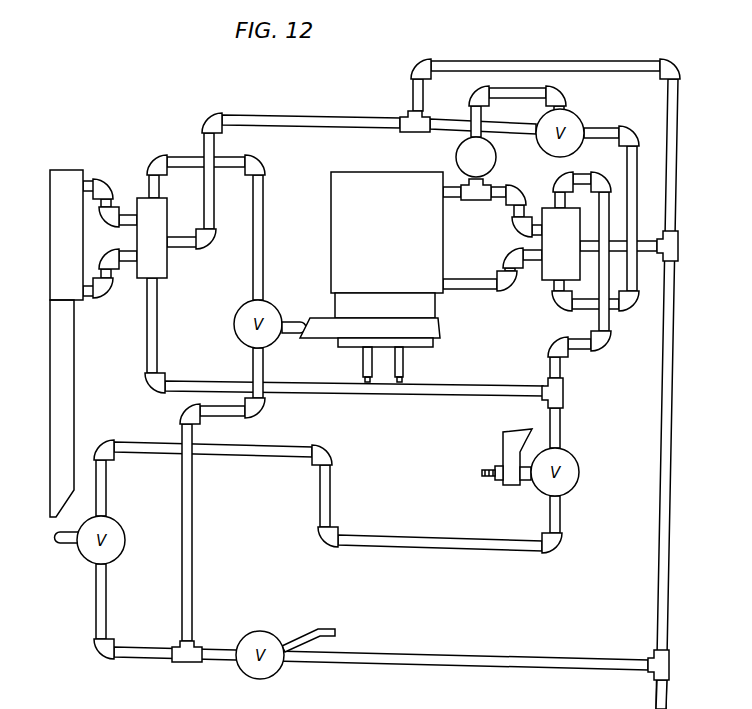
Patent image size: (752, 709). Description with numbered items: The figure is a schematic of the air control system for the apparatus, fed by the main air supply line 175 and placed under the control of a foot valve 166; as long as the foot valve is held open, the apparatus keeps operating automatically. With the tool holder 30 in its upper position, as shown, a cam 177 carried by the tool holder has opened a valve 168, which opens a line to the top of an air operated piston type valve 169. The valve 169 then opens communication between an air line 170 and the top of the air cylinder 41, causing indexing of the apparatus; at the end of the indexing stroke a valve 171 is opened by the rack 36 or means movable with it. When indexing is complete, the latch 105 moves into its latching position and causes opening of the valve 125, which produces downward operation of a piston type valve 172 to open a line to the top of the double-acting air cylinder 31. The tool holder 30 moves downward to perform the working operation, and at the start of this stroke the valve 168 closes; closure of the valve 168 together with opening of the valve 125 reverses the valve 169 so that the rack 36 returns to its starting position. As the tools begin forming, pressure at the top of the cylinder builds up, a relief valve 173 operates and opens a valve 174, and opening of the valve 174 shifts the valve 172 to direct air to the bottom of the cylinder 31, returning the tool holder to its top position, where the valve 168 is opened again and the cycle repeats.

The air cylinder 41 is at (50, 218).
The rack 36 is at (52, 432).
The air operated piston type valve 169 is at (160, 274).
The air line 170 is at (190, 232).
The valve 168 is at (236, 330).
The double-acting air cylinder 31 is at (340, 228).
The tool holder 30 is at (335, 343).
The cam 177 is at (432, 332).
The piston type valve 172 is at (548, 274).
The relief valve 173 is at (492, 167).
The valve 174 is at (545, 124).
The latch 105 is at (503, 445).
The valve 125 is at (570, 470).
The valve 171 is at (119, 541).
The foot valve 166 is at (268, 673).
The main air supply line 175 is at (669, 694).